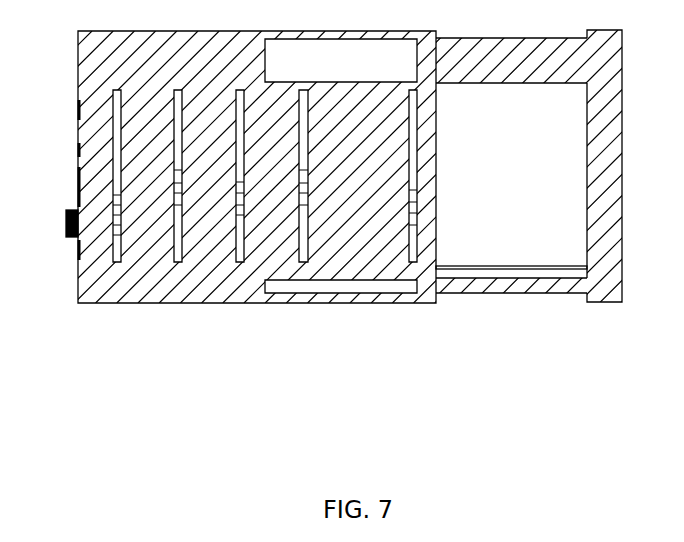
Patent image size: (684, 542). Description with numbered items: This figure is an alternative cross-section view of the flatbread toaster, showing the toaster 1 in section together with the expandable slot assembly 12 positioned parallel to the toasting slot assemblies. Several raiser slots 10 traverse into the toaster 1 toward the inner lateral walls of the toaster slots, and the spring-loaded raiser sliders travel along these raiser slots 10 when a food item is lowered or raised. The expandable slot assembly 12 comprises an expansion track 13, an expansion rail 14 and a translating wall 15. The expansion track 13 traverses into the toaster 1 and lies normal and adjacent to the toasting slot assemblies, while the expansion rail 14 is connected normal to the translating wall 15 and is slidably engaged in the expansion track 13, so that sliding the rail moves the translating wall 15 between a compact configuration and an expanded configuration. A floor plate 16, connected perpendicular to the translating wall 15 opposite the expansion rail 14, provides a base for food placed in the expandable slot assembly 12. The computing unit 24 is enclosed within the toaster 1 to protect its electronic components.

The toaster 1 is at (65, 292).
The raiser slot 10 is at (175, 138).
The expandable slot assembly 12 is at (626, 97).
The expansion track 13 is at (265, 70).
The expansion rail 14 is at (515, 38).
The translating wall 15 is at (613, 157).
The floor plate 16 is at (514, 266).
The computing unit 24 is at (80, 135).